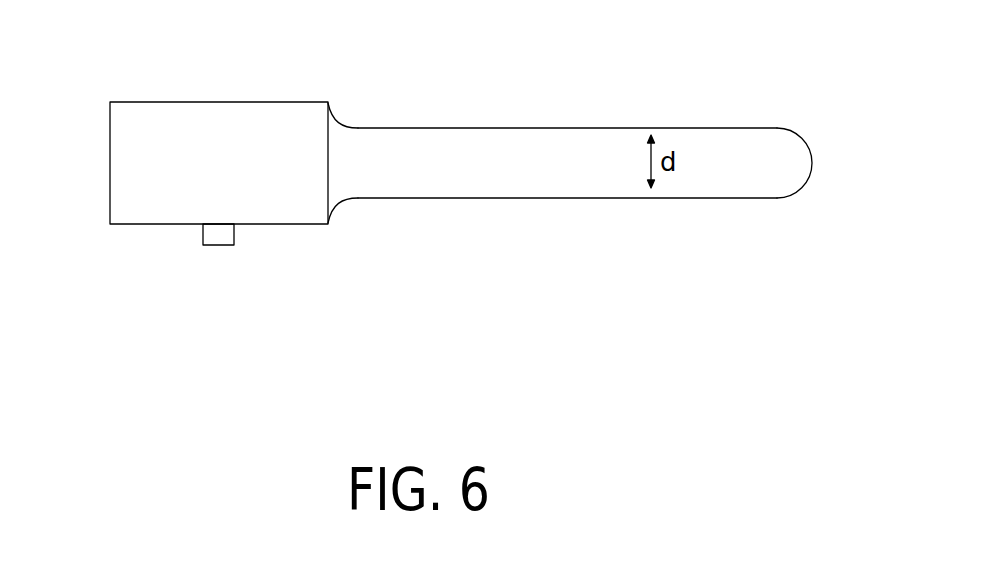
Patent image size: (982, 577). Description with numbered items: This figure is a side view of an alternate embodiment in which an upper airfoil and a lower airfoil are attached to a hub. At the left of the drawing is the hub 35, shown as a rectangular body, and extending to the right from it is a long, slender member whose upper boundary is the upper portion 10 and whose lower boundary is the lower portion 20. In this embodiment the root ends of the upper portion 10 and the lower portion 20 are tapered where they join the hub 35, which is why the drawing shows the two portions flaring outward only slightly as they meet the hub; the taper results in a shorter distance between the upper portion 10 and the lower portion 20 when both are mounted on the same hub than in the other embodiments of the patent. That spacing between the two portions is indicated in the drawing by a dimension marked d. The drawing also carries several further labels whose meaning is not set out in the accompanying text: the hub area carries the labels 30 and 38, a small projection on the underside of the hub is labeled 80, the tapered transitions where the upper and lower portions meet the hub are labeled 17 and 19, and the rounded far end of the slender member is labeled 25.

The housing 30 is at (297, 117).
The hub 35 is at (157, 163).
The base of housing 38 is at (142, 213).
The connector / port 80 is at (223, 240).
The upper neck transition 17 is at (337, 122).
The lower neck transition 19 is at (337, 205).
The upper portion 10 is at (517, 127).
The lower portion 20 is at (557, 198).
The rounded distal tip 25 is at (813, 162).